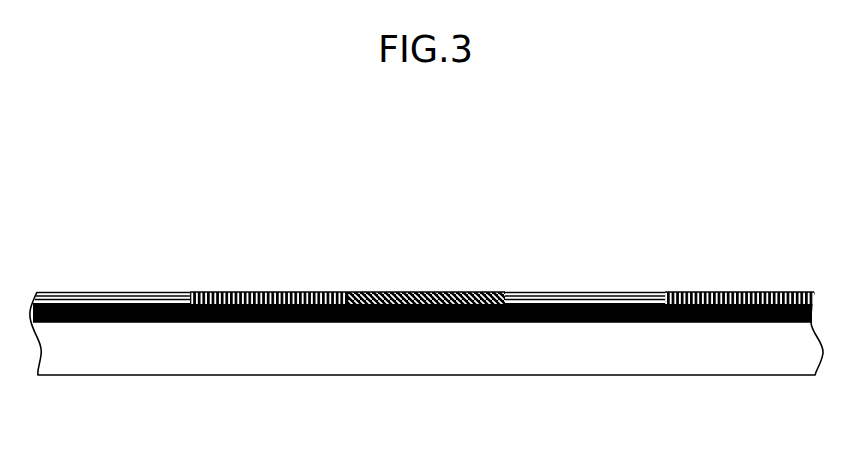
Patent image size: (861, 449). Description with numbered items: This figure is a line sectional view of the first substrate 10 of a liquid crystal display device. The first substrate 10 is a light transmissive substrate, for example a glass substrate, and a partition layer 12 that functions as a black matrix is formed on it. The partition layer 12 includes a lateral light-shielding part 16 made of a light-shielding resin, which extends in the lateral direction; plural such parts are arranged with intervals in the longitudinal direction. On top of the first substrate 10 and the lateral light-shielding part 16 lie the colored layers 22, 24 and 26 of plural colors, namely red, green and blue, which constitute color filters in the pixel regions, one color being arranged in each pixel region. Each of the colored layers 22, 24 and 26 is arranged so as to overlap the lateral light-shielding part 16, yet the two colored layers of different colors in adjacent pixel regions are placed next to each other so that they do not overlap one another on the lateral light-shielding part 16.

The first substrate 10 is at (630, 367).
The partition layer 12 is at (467, 313).
The lateral light-shielding part 16 is at (422, 364).
The colored layer 22 is at (265, 299).
The colored layer 24 is at (425, 299).
The colored layer 26 is at (110, 300).